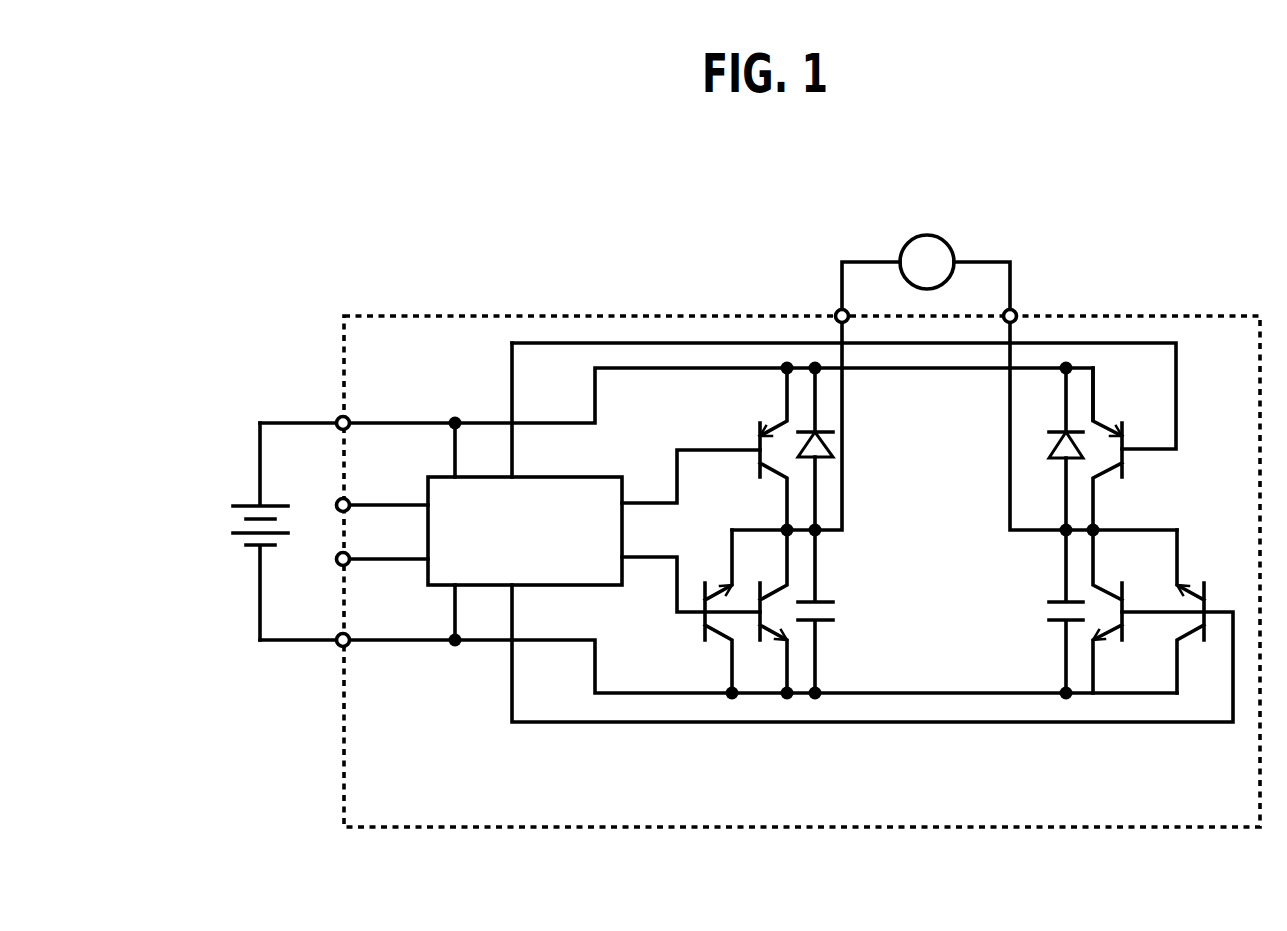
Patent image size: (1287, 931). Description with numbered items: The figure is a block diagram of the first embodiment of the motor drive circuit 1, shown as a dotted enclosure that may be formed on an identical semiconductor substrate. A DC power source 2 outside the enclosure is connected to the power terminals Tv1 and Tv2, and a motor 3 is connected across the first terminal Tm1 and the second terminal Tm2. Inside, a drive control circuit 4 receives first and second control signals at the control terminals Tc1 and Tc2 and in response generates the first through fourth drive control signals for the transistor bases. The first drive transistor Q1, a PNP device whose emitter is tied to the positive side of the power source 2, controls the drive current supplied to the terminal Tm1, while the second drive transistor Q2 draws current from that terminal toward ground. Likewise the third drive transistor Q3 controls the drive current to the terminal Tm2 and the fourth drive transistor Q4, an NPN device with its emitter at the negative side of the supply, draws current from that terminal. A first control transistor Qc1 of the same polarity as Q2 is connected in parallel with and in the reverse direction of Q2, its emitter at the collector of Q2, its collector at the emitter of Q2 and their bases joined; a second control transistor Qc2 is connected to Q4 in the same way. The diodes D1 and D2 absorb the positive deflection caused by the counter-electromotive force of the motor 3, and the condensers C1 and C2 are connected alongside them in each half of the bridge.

The motor drive unit 1 is at (463, 308).
The DC power source 2 is at (230, 530).
The motor 3 is at (950, 246).
The drive control circuit 4 is at (563, 477).
The power terminal Tv1 is at (338, 418).
The power terminal Tv2 is at (338, 648).
The first control terminal Tc1 is at (338, 500).
The second control terminal Tc2 is at (338, 566).
The first terminal of the motor Tm1 is at (837, 310).
The second terminal of the motor Tm2 is at (1016, 310).
The first drive transistor Q1 is at (764, 449).
The second drive transistor Q2 is at (766, 611).
The third drive transistor Q3 is at (1114, 449).
The fourth drive transistor Q4 is at (1114, 611).
The first control transistor Qc1 is at (682, 611).
The second control transistor Qc2 is at (1211, 611).
The diode D1 is at (839, 449).
The diode D2 is at (1025, 449).
The condenser C1 is at (840, 611).
The condenser C2 is at (1039, 611).